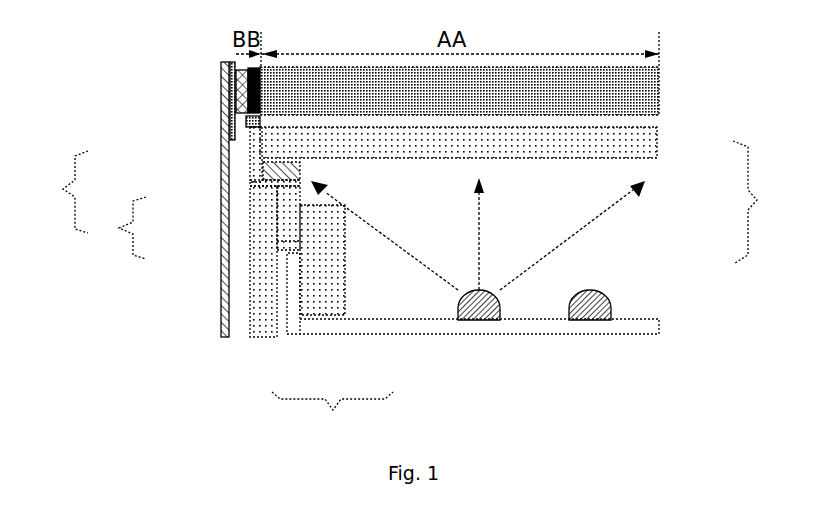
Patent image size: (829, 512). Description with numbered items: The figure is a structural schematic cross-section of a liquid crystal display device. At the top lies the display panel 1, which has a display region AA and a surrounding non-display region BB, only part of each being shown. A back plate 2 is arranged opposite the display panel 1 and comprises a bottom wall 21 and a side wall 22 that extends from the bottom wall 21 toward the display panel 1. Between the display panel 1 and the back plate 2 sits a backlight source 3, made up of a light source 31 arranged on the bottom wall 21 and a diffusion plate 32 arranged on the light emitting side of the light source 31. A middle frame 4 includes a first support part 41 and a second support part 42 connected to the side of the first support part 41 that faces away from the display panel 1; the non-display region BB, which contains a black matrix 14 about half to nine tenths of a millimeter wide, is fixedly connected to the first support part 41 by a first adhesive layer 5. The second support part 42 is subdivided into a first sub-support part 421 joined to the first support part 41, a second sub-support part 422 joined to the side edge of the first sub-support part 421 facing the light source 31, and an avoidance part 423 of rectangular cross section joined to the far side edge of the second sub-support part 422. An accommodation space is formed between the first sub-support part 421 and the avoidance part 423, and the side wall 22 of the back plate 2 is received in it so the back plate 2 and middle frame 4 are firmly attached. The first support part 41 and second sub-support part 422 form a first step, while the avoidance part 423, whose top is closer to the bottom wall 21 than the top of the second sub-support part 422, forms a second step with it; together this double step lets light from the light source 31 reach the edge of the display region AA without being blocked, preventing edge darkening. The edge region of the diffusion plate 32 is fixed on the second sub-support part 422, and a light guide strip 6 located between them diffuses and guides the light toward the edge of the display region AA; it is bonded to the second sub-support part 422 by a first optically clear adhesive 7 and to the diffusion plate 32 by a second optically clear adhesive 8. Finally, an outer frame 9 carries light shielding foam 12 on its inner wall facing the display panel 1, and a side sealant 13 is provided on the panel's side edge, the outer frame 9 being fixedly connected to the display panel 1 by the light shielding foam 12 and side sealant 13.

The display panel 1 is at (660, 93).
The back plate 2 is at (459, 345).
The bottom wall 21 is at (402, 334).
The side wall 22 is at (293, 287).
The backlight source 3 is at (616, 230).
The light source 31 is at (612, 298).
The diffusion plate 32 is at (657, 143).
The middle frame 4 is at (68, 192).
The first support part 41 is at (255, 145).
The second support part 42 is at (119, 228).
The first sub-support part 421 is at (292, 224).
The second sub-support part 422 is at (262, 202).
The avoidance part 423 is at (327, 247).
The first adhesive layer 5 is at (247, 121).
The light guide strip 6 is at (478, 226).
The first optically clear adhesive 7 is at (300, 182).
The second optically clear adhesive 8 is at (268, 161).
The outer frame 9 is at (221, 278).
The light shielding foam 12 is at (240, 72).
The side sealant 13 is at (240, 86).
The black matrix 14 is at (250, 101).